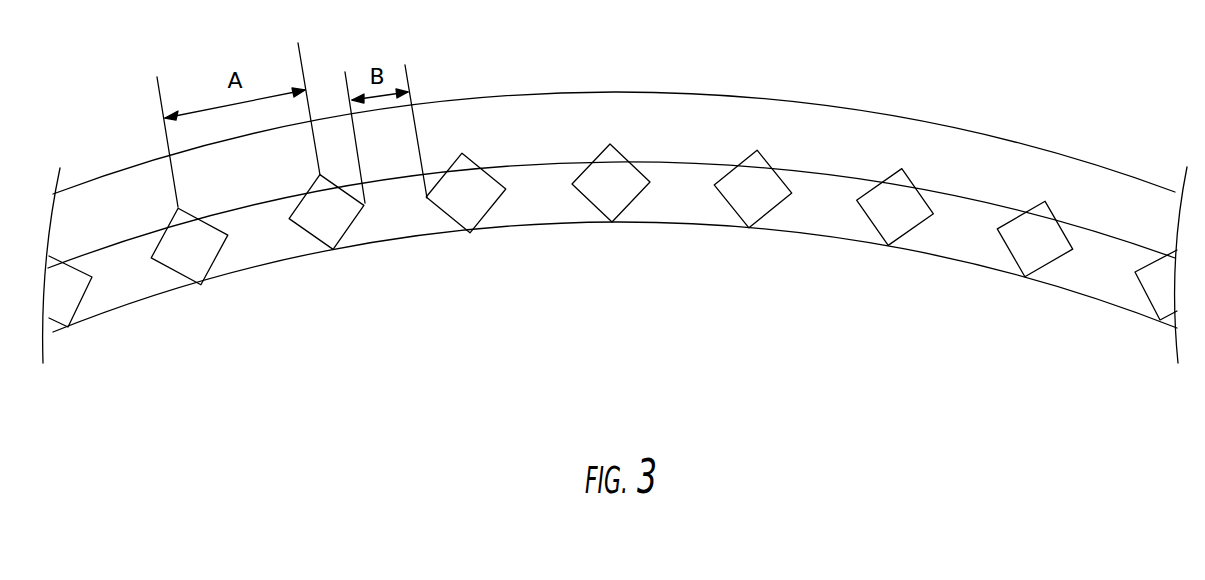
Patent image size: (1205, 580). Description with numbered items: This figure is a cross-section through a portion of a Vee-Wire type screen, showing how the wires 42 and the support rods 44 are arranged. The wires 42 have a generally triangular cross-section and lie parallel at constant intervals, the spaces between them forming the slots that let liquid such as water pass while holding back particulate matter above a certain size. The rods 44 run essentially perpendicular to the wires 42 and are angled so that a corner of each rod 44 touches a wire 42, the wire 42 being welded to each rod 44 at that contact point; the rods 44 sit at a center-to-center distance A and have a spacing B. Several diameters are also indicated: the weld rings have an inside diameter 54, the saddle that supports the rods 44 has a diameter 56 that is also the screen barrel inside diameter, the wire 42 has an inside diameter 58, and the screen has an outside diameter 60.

The wires 42 is at (615, 188).
The support rods 44 is at (752, 208).
The inside diameter of the rings 54 is at (243, 215).
The saddle diameter 56 is at (962, 263).
The wire inside diameter 58 is at (607, 165).
The screen outside diameter 60 is at (937, 122).